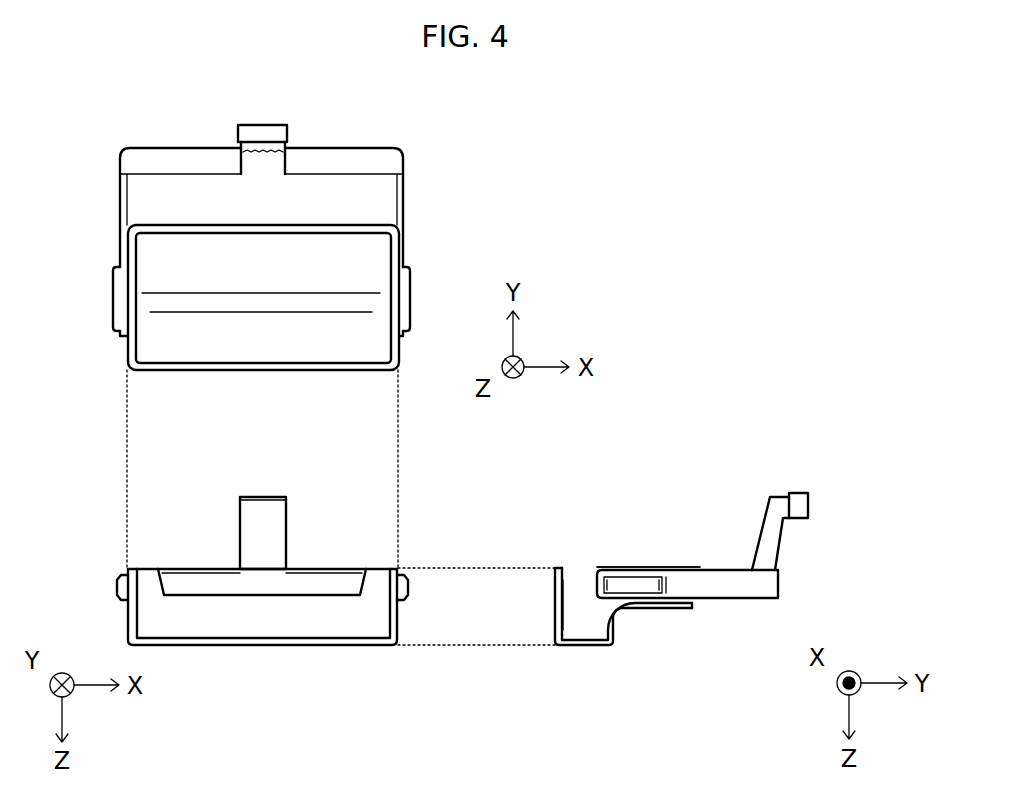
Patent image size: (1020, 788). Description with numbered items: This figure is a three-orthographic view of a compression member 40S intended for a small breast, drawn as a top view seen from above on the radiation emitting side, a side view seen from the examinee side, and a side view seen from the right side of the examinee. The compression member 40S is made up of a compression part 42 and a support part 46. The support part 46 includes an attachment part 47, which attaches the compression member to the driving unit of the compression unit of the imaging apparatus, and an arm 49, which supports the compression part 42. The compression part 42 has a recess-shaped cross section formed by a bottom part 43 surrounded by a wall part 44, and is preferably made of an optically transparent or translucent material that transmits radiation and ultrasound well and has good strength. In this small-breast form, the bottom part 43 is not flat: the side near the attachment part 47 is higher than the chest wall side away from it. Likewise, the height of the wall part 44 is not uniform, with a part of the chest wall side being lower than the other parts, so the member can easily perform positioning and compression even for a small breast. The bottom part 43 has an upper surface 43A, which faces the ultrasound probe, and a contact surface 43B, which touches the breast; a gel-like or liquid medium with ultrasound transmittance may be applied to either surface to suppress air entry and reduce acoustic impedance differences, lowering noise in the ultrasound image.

The compression member for a small breast 40S is at (726, 130).
The compression part 42 is at (121, 352).
The bottom part 43 is at (278, 346).
The upper surface 43A is at (343, 637).
The contact surface 43B is at (345, 646).
The wall part 44 is at (183, 371).
The support part 46 is at (413, 184).
The attachment part 47 is at (282, 134).
The arm 49 is at (410, 296).